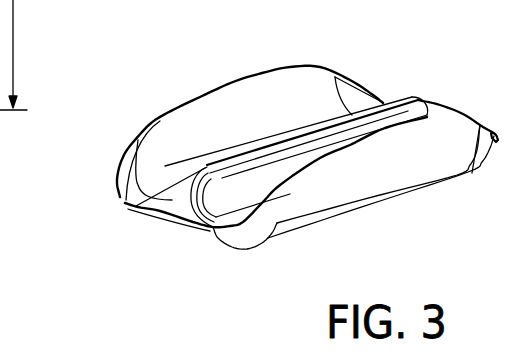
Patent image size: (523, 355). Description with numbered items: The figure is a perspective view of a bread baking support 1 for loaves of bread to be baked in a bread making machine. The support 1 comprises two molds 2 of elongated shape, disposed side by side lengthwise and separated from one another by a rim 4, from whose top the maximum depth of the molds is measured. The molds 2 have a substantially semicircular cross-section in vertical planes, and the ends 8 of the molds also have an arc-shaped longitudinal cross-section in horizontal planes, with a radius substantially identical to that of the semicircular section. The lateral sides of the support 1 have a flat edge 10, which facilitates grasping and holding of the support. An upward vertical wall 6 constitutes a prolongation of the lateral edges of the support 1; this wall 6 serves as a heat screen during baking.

The support 1 is at (253, 181).
The molds 2 is at (150, 188).
The rim 4 is at (290, 130).
The upward vertical wall 6 is at (218, 103).
The ends 8 is at (242, 252).
The flat edge 10 is at (163, 208).